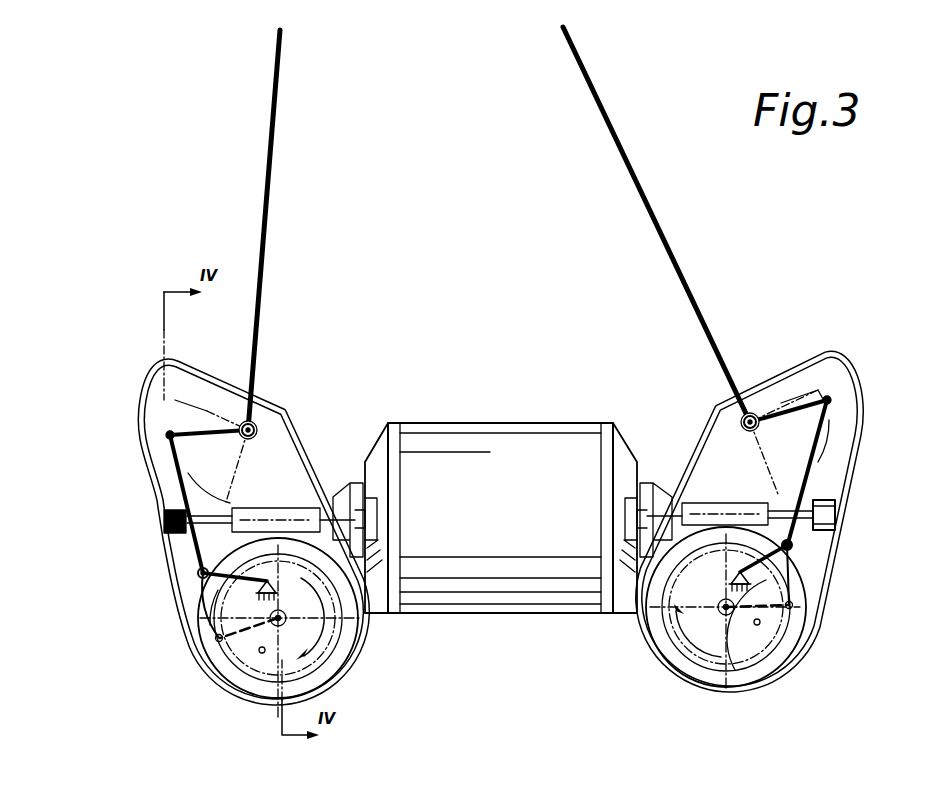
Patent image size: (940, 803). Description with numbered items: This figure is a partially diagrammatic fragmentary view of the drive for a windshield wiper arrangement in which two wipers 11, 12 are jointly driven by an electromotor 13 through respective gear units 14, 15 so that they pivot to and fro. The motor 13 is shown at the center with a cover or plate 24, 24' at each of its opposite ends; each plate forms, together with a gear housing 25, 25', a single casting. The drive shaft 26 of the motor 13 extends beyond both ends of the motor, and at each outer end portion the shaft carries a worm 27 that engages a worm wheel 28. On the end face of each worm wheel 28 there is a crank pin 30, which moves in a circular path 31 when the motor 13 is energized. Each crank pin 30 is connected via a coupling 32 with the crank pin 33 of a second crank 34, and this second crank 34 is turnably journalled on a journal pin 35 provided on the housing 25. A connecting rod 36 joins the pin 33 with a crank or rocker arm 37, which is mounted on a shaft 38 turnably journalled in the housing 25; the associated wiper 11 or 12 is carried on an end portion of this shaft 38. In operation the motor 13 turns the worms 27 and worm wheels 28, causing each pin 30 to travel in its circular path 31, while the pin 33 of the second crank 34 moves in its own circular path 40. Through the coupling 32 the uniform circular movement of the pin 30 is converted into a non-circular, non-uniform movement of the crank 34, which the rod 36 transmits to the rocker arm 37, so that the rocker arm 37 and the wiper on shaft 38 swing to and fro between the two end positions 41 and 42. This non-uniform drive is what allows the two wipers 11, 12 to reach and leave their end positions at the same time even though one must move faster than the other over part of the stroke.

The wiper 11 is at (270, 259).
The wiper 12 is at (688, 258).
The electromotor 13 is at (553, 585).
The gear unit 14 is at (160, 455).
The gear unit 15 is at (838, 463).
The cover or plate 24 is at (360, 506).
The cover or plate 24' is at (635, 490).
The gear housing 25 is at (279, 391).
The gear housing 25' is at (711, 387).
The drive shaft 26 is at (170, 525).
The worm 27 is at (283, 512).
The worm wheel 28 is at (230, 685).
The crank pin 30 is at (212, 648).
The circular path 31 is at (325, 660).
The coupling 32 is at (212, 630).
The crank pin 33 is at (205, 576).
The second crank 34 is at (205, 560).
The journal pin 35 is at (276, 580).
The connecting rod 36 is at (162, 489).
The crank or rocker arm 37 is at (195, 426).
The shaft 38 is at (256, 426).
The circular path 40 is at (262, 653).
The end position 41 is at (207, 410).
The end position 42 is at (250, 458).